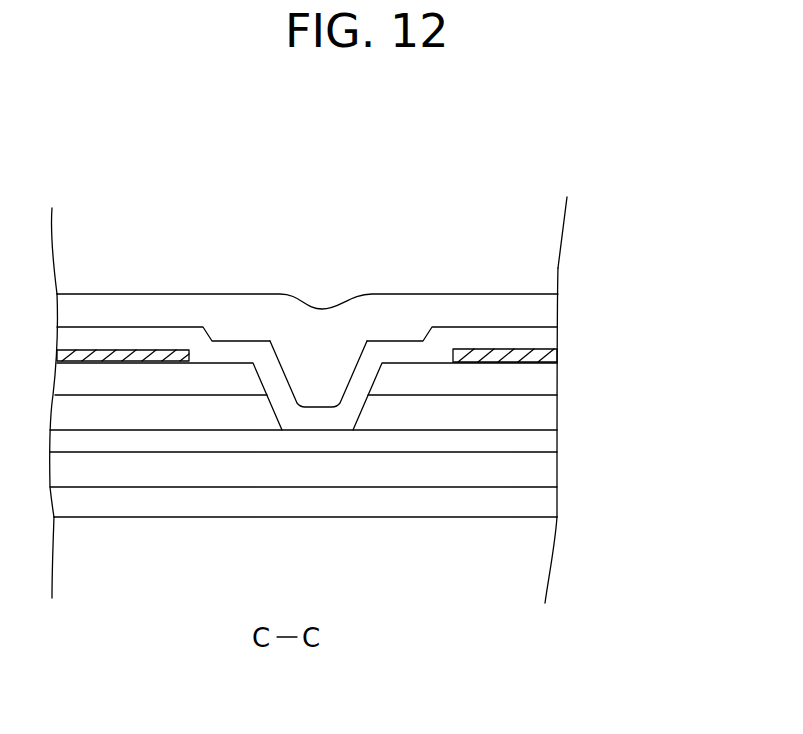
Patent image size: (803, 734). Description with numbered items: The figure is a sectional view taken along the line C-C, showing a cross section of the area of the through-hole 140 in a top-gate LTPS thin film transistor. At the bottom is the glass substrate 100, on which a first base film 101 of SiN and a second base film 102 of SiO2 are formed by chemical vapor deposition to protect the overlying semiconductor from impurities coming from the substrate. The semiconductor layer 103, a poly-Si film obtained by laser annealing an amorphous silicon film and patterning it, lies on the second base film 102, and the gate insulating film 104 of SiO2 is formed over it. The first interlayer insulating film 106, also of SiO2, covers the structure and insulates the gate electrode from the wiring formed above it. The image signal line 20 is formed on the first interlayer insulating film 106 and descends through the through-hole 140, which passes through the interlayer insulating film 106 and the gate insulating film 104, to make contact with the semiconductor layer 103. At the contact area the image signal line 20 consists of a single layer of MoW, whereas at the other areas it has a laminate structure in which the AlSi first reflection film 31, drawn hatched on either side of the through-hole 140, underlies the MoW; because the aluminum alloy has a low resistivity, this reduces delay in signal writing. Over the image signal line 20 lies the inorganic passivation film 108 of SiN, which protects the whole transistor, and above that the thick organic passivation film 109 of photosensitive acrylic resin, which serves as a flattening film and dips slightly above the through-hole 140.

The glass substrate 100 is at (538, 552).
The first base film 101 is at (540, 505).
The second base film 102 is at (540, 470).
The semiconductor layer 103 is at (540, 442).
The gate insulating film 104 is at (540, 413).
The first interlayer insulating film 106 is at (542, 383).
The image signal line 20 is at (547, 337).
The first reflection film 31 is at (550, 357).
The inorganic passivation film 108 is at (547, 312).
The organic passivation film 109 is at (541, 262).
The through-hole 140 is at (317, 387).